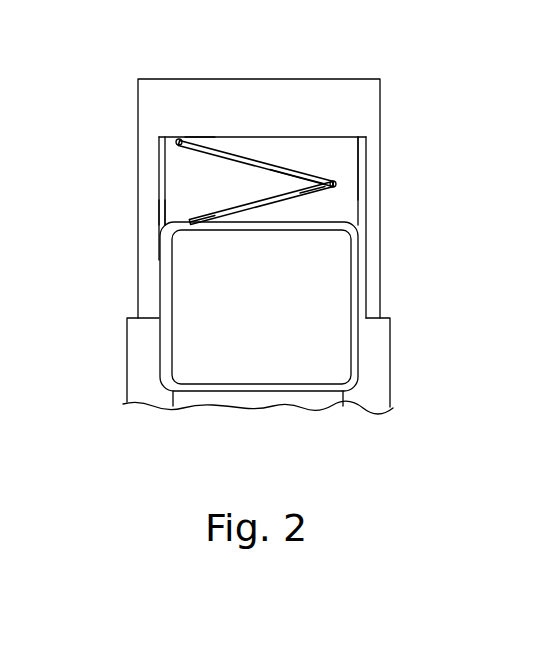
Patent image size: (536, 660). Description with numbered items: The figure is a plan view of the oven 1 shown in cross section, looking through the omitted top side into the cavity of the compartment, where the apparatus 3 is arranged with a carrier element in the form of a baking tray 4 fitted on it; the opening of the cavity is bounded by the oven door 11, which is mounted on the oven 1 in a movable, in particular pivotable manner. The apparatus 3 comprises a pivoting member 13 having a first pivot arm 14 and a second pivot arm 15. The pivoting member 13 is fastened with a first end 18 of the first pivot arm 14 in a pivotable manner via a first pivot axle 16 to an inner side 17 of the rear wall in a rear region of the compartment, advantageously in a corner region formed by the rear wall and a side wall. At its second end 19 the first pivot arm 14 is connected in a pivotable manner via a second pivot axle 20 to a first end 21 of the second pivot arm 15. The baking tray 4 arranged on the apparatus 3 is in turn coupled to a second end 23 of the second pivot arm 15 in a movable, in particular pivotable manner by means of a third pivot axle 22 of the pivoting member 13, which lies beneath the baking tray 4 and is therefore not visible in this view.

The oven 1 is at (129, 418).
The apparatus 3 is at (358, 150).
The baking tray 4 is at (251, 364).
The oven door 11 is at (140, 368).
The pivoting member 13 is at (312, 154).
The first pivot arm 14 is at (232, 146).
The second pivot arm 15 is at (238, 208).
The first pivot axle 16 is at (178, 139).
The inner side 17 is at (283, 146).
The first end 18 is at (197, 128).
The second end 19 is at (338, 148).
The second pivot axle 20 is at (336, 184).
The first end 21 is at (329, 204).
The third pivot axle 22 is at (155, 232).
The second end 23 is at (179, 206).